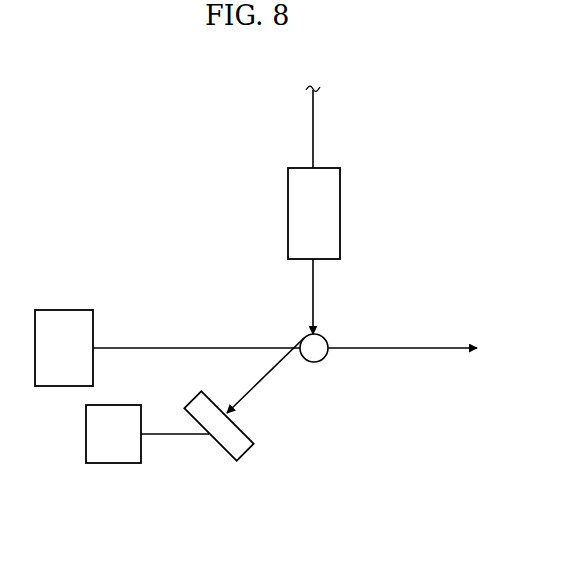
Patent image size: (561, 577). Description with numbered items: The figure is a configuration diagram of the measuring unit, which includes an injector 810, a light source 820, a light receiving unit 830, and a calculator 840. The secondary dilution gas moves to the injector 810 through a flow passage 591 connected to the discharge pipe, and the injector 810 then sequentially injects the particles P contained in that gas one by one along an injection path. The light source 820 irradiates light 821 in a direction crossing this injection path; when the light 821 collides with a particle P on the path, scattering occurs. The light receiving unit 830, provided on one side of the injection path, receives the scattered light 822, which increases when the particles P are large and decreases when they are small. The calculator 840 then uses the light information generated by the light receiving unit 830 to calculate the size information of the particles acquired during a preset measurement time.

The flow passage 591 is at (313, 122).
The injector 810 is at (340, 212).
The particles P is at (326, 359).
The light source 820 is at (79, 310).
The light 821 is at (210, 348).
The scattered light 822 is at (267, 375).
The light receiving unit 830 is at (244, 462).
The calculator 840 is at (127, 464).